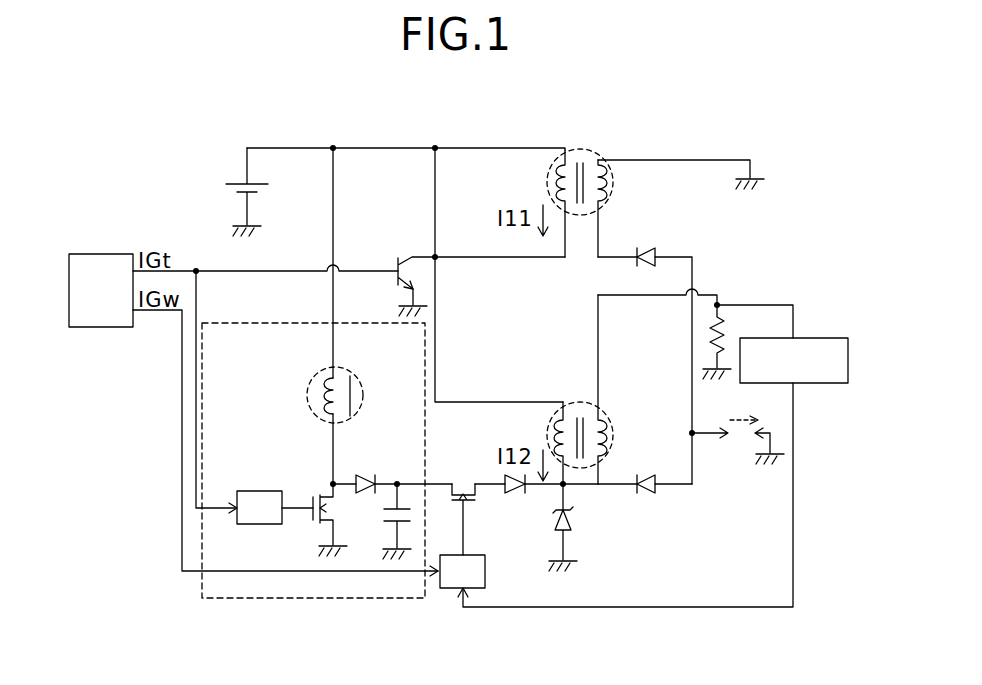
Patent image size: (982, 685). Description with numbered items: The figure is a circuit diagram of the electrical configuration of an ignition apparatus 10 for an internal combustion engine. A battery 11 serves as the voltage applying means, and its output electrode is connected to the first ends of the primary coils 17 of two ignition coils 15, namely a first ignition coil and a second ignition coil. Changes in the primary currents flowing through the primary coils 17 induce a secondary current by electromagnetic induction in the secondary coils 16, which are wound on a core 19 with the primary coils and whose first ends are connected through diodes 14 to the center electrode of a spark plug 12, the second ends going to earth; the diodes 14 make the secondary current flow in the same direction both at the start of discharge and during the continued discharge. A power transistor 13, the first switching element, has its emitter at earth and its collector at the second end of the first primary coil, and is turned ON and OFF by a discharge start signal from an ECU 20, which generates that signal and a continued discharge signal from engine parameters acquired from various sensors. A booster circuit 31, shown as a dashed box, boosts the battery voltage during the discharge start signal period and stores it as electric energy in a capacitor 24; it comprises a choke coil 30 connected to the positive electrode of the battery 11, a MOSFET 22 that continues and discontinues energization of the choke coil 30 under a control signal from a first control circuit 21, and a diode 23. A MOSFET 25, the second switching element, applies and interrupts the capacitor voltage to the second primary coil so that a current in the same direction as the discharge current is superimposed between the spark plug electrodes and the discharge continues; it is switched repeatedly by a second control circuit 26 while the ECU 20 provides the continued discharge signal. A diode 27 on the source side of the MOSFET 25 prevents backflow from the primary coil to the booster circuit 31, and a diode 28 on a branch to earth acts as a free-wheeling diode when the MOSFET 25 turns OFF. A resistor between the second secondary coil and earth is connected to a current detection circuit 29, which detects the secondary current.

The ignition apparatus 10 is at (786, 120).
The battery 11 is at (240, 186).
The spark plug 12 is at (742, 455).
The power transistor 13 is at (398, 262).
The diode 14 is at (656, 252).
The ignition coil 15 is at (622, 148).
The secondary coil 16 is at (612, 183).
The primary coil 17 is at (320, 392).
The core 19 is at (352, 378).
The ECU 20 is at (130, 256).
The first control circuit 21 is at (282, 491).
The MOSFET 22 is at (313, 516).
The diode 23 is at (364, 476).
The capacitor 24 is at (388, 523).
The MOSFET 25 is at (460, 503).
The second control circuit 26 is at (472, 555).
The diode 27 is at (520, 493).
The diode 28 is at (569, 516).
The current detection circuit 29 is at (815, 338).
The choke coil 30 is at (320, 372).
The booster circuit 31 is at (232, 330).